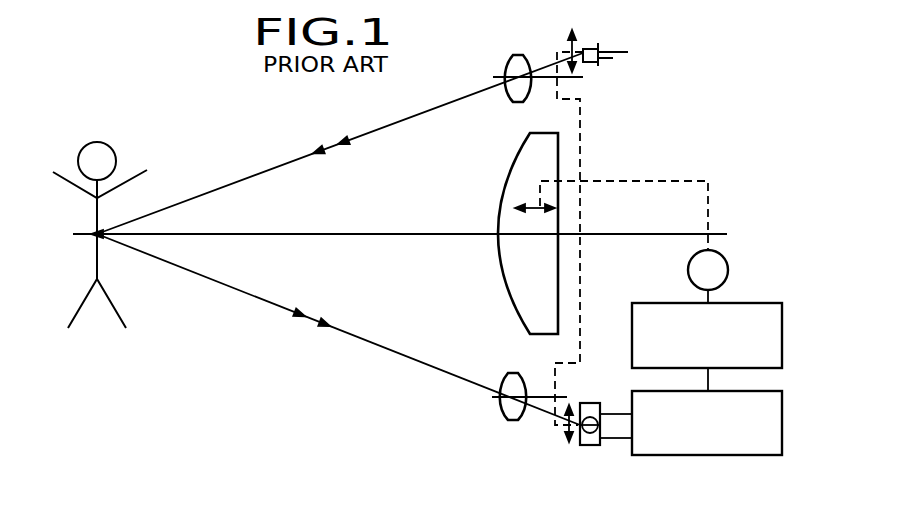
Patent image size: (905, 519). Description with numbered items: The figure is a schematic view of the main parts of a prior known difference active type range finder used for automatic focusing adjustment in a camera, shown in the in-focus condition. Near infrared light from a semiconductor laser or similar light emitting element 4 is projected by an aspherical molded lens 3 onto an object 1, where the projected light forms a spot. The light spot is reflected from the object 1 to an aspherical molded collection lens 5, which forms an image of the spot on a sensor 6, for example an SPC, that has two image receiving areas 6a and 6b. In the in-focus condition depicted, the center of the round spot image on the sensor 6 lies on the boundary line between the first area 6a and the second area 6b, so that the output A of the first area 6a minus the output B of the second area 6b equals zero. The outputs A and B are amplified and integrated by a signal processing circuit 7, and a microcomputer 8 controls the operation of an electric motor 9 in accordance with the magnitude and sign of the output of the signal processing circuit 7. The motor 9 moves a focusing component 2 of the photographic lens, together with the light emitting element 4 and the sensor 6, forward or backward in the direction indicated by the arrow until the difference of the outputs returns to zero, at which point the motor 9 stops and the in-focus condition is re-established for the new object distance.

The object 1 is at (97, 259).
The focusing component 2 is at (519, 155).
The aspherical molded lens 3 is at (518, 55).
The light emitting element 4 is at (585, 49).
The aspherical molded collection lens 5 is at (512, 372).
The sensor 6 is at (596, 430).
The first area 6a is at (590, 405).
The second area 6b is at (595, 447).
The signal processing circuit 7 is at (718, 455).
The microcomputer 8 is at (755, 303).
The electric motor 9 is at (687, 272).